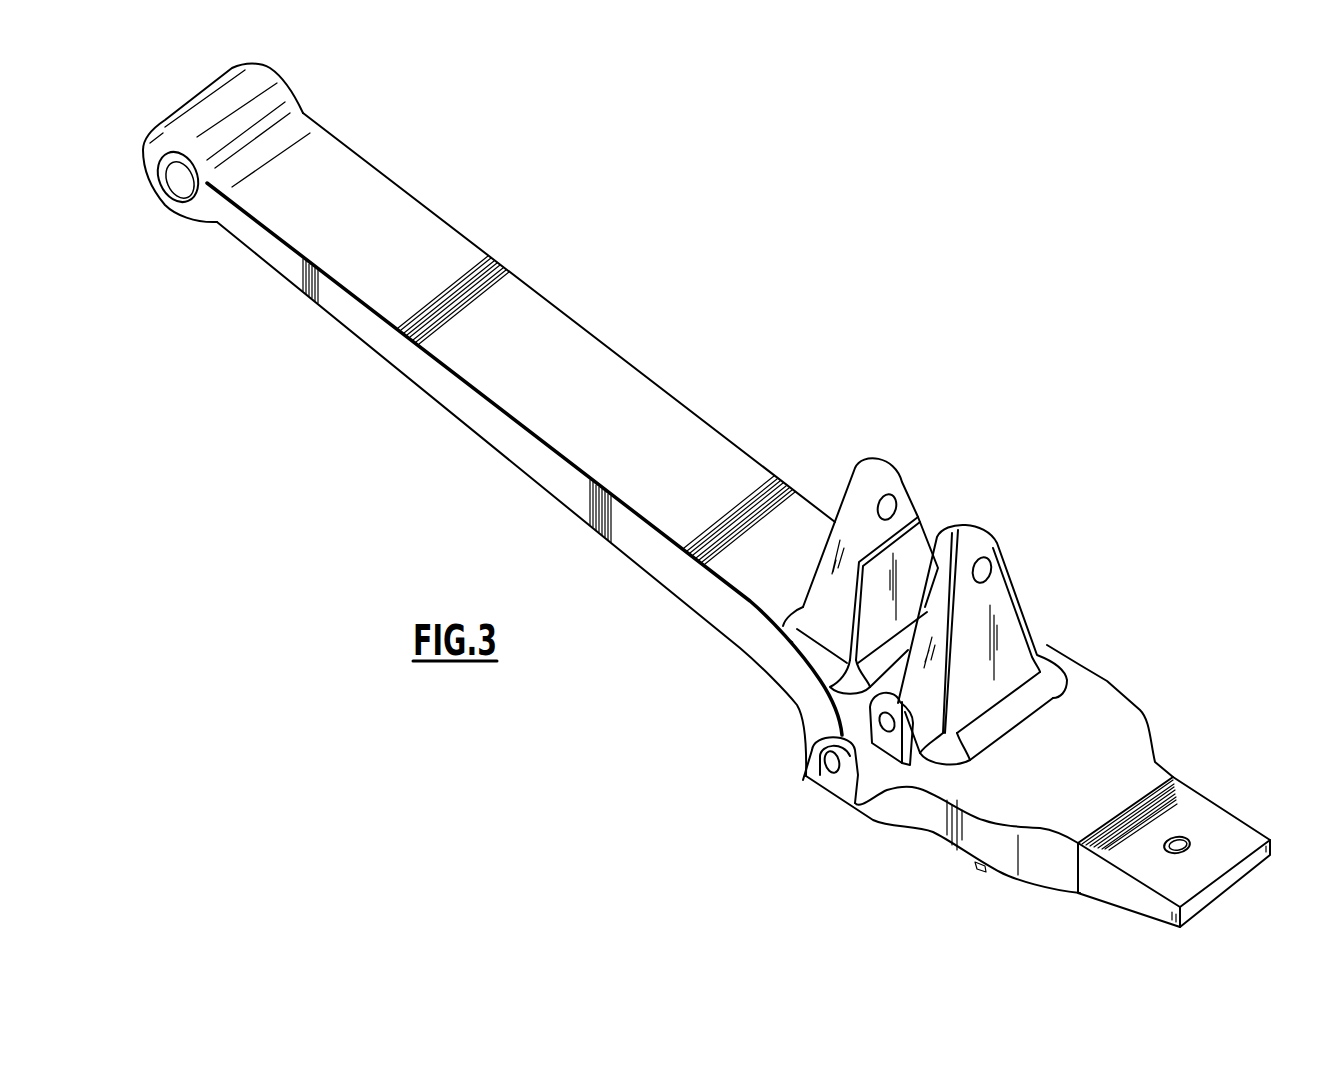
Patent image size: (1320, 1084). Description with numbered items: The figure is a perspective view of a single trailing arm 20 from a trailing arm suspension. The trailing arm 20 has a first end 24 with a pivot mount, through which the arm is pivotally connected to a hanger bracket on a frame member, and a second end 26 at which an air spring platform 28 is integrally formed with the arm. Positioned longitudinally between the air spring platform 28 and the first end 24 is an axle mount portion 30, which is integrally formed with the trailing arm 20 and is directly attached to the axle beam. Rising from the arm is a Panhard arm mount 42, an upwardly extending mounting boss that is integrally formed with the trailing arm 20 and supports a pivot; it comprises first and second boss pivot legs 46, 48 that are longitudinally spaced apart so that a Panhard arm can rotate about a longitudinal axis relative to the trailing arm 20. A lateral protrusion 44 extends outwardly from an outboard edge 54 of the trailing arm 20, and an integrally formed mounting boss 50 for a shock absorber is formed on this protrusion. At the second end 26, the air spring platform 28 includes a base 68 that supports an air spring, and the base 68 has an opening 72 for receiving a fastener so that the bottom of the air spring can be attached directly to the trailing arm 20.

The trailing arm 20 is at (603, 376).
The first end 24 is at (183, 214).
The second end 26 is at (1200, 900).
The air spring platform 28 is at (1183, 817).
The axle mount portion 30 is at (871, 832).
The Panhard arm mount 42 is at (1055, 640).
The lateral protrusion 44 is at (815, 757).
The first boss pivot leg 46 is at (913, 548).
The second boss pivot leg 48 is at (1003, 604).
The mounting boss 50 is at (828, 781).
The outboard edge 54 is at (805, 708).
The base 68 is at (1191, 887).
The opening 72 is at (1190, 838).